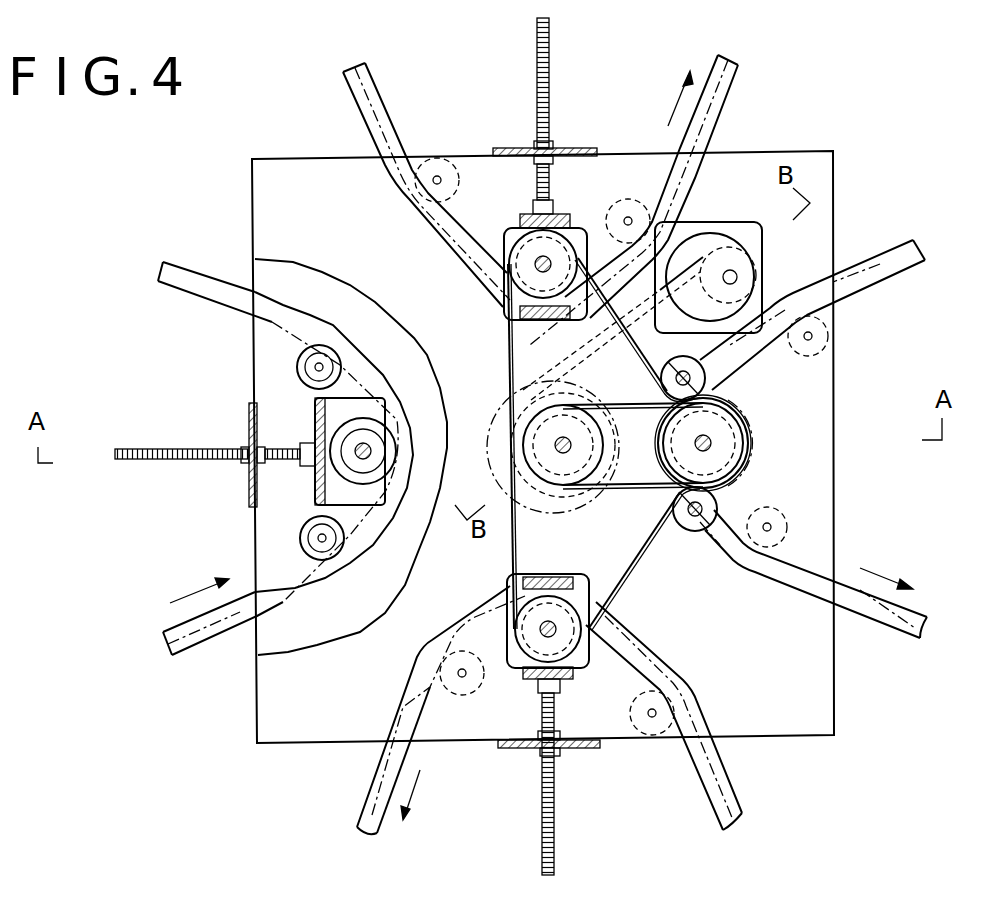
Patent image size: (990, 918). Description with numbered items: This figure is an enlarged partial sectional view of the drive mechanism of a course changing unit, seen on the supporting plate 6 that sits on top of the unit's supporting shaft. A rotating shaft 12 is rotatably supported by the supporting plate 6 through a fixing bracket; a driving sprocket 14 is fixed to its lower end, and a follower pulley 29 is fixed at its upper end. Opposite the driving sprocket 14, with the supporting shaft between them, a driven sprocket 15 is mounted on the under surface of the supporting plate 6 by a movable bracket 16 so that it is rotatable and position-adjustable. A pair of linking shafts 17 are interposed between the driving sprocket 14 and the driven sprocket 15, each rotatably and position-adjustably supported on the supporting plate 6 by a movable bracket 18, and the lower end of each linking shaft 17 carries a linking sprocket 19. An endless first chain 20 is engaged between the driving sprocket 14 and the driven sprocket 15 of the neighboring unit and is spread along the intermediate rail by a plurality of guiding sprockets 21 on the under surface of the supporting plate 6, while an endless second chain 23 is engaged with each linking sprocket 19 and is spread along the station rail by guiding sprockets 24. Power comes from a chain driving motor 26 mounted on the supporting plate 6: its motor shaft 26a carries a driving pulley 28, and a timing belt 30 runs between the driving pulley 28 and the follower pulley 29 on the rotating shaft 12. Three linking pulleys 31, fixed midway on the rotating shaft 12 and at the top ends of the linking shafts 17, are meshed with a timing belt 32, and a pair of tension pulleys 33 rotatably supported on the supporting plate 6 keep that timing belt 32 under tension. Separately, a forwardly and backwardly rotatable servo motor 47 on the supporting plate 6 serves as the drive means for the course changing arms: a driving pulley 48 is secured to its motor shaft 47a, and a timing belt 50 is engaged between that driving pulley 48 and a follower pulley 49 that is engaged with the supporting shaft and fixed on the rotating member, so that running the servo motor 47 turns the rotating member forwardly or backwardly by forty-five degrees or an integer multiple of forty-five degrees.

The supporting plate 6 is at (300, 170).
The rotating shaft 12 is at (713, 445).
The driving sprocket 14 is at (742, 453).
The driven sprocket 15 is at (390, 445).
The movable bracket 16 is at (313, 423).
The linking shaft 17 is at (538, 258).
The movable bracket 18 is at (503, 314).
The linking sprocket 19 is at (580, 226).
The first chain 20 is at (228, 277).
The guiding sprocket 21 is at (303, 373).
The second chain 23 is at (713, 135).
The guiding sprocket 24 is at (457, 167).
The chain driving motor 26 is at (512, 422).
The motor shaft 26a is at (562, 440).
The driving pulley 28 is at (572, 480).
The follower pulley 29 is at (727, 482).
The timing belt 30 is at (622, 486).
The linking pulley 31 is at (541, 322).
The timing belt 32 is at (655, 545).
The tension pulley 33 is at (708, 372).
The servo motor 47 is at (715, 235).
The motor shaft 47a is at (750, 283).
The driving pulley 48 is at (747, 258).
The follower pulley 49 is at (500, 475).
The timing belt 50 is at (612, 325).